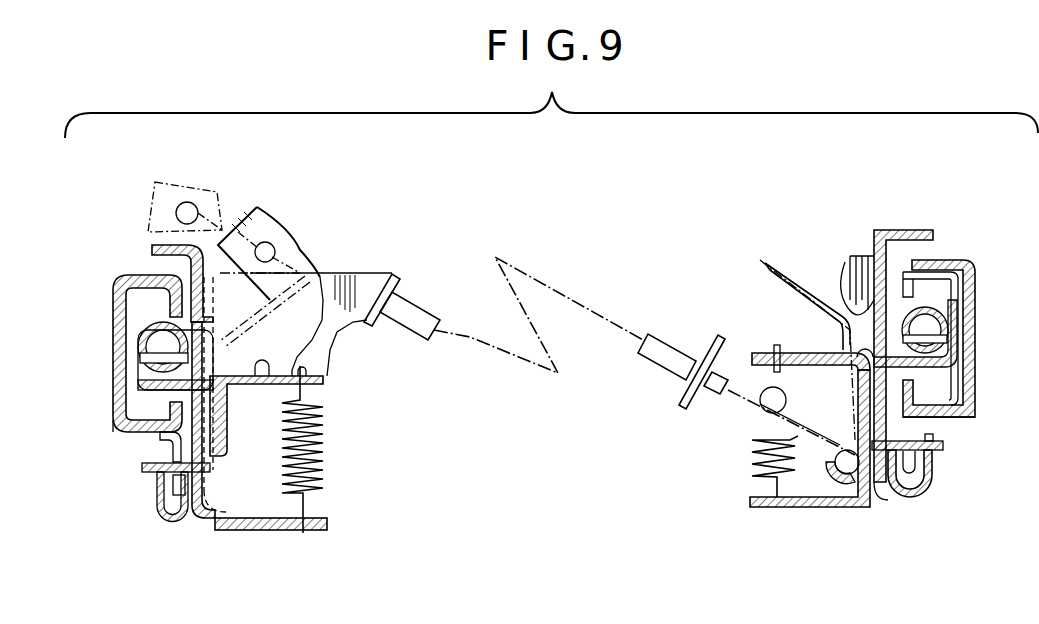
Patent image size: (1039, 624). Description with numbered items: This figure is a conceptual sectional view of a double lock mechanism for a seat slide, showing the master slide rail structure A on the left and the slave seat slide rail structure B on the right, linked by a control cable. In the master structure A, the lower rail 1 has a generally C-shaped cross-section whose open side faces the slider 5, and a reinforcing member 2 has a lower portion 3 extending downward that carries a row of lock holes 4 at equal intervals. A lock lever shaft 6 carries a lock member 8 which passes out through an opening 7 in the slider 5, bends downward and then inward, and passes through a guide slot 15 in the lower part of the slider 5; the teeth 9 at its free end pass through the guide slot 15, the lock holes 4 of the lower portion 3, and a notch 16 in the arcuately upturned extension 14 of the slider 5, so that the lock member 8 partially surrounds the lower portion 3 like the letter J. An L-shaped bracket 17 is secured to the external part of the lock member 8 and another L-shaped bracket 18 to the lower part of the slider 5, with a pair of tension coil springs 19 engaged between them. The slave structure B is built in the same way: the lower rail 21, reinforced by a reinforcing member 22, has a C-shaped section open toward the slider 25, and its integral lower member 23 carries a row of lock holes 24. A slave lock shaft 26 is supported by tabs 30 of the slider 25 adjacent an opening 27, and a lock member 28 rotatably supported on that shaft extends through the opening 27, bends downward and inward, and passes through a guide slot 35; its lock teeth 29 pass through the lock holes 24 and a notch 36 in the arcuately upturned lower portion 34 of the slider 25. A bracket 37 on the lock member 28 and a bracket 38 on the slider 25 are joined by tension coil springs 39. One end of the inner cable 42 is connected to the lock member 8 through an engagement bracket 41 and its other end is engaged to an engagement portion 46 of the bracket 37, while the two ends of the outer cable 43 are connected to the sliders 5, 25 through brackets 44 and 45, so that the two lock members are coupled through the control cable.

The lower rail 1 is at (118, 333).
The reinforcing member 2 is at (118, 432).
The lower portion 3 is at (170, 451).
The lock holes 4 is at (200, 518).
The slider 5 is at (152, 251).
The lock lever shaft 6 is at (138, 376).
The opening 7 is at (190, 328).
The lock member 8 is at (220, 458).
The teeth 9 is at (142, 467).
The extension 14 is at (163, 517).
The guide slot 15 is at (205, 476).
The notch 16 is at (157, 480).
The bracket 17 is at (327, 379).
The bracket 18 is at (258, 531).
The tension coil springs 19 is at (327, 460).
The lower rail 21 is at (957, 266).
The reinforcing member 22 is at (978, 280).
The lower member 23 is at (913, 423).
The lock holes 24 is at (905, 503).
The slider 25 is at (935, 232).
The slave lock shaft 26 is at (940, 358).
The opening 27 is at (833, 292).
The lock member 28 is at (868, 507).
The lock teeth 29 is at (945, 446).
The tabs 30 is at (947, 311).
The lower portion 34 is at (927, 492).
The guide slot 35 is at (838, 447).
The notch 36 is at (933, 462).
The bracket 37 is at (803, 353).
The bracket 38 is at (793, 507).
The tension coil springs 39 is at (752, 470).
The engagement bracket 41 is at (282, 242).
The inner cable 42 is at (335, 273).
The outer cable 43 is at (420, 303).
The bracket 44 is at (372, 275).
The bracket 45 is at (677, 403).
The engagement portion 46 is at (827, 477).
The master slide rail structure A is at (222, 182).
The slave seat slide rail structure B is at (869, 232).